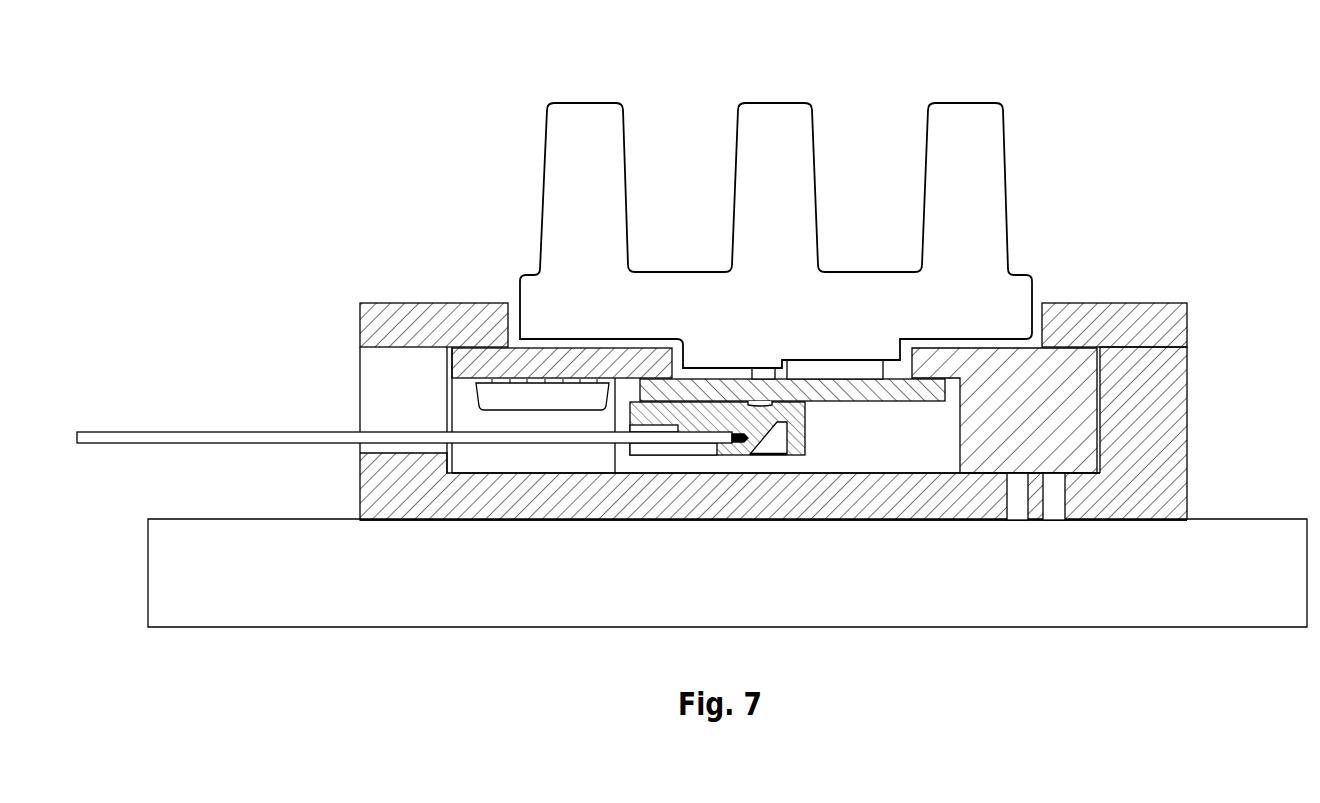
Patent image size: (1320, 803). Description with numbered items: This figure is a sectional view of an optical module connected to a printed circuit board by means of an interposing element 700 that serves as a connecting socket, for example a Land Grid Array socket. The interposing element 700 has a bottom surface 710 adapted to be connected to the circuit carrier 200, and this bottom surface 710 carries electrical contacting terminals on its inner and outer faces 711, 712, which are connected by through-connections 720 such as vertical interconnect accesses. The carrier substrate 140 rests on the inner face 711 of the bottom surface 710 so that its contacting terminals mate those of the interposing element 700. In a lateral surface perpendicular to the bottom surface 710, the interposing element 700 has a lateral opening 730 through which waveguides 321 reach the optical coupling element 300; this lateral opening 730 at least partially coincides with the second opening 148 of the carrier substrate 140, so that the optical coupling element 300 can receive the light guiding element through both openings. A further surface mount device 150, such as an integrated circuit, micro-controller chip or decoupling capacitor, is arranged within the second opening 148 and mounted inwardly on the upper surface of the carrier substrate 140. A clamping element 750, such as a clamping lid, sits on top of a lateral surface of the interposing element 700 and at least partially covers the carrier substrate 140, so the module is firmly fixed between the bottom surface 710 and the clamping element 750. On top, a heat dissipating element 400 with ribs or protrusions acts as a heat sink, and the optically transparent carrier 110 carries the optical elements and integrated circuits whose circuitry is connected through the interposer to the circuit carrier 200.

The optically transparent carrier 110 is at (858, 393).
The carrier substrate 140 is at (972, 447).
The second opening 148 is at (468, 422).
The surface mount device 150 is at (498, 397).
The circuit carrier 200 is at (1243, 537).
The optical coupling element 300 is at (737, 455).
The waveguides 321 is at (172, 430).
The heat dissipating element 400 is at (562, 183).
The interposing element 700 is at (1170, 383).
The bottom surface 710 is at (622, 505).
The inner face 711 is at (532, 474).
The outer face 712 is at (718, 520).
The through-connections 720 is at (1052, 505).
The lateral opening 730 is at (360, 350).
The clamping element 750 is at (1104, 318).